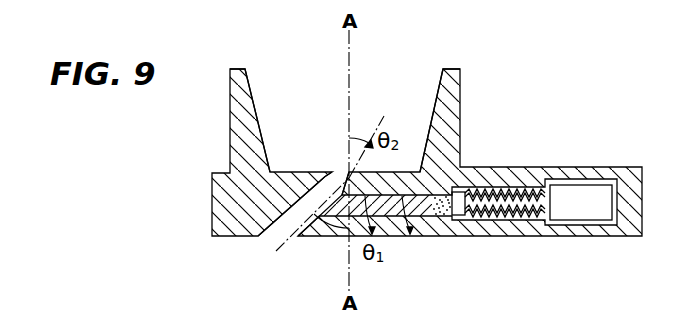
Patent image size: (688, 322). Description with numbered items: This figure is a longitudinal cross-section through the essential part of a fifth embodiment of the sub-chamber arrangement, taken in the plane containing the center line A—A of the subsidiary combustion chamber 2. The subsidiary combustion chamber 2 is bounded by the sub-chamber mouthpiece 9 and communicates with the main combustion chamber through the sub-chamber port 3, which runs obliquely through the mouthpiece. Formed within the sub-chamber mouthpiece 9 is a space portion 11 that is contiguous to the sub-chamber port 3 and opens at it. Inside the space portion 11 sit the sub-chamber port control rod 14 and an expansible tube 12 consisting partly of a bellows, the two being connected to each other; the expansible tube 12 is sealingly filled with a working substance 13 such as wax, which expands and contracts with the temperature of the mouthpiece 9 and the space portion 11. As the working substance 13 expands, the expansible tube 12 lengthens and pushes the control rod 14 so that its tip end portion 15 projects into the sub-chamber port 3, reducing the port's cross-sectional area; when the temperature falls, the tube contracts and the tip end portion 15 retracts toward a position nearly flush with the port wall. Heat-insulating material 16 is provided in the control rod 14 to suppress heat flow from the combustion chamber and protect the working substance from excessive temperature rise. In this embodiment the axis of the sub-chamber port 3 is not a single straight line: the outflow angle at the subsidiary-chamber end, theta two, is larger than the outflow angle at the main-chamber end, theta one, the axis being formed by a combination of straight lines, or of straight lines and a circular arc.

The subsidiary combustion chamber 2 is at (433, 80).
The sub-chamber mouthpiece 9 is at (457, 88).
The sub-chamber port 3 is at (281, 232).
The tip end portion 15 is at (345, 232).
The sub-chamber port control rod 14 is at (413, 226).
The heat-insulating material 16 is at (438, 208).
The expansible tube 12 is at (496, 220).
The space portion 11 is at (502, 220).
The working substance 13 is at (563, 200).